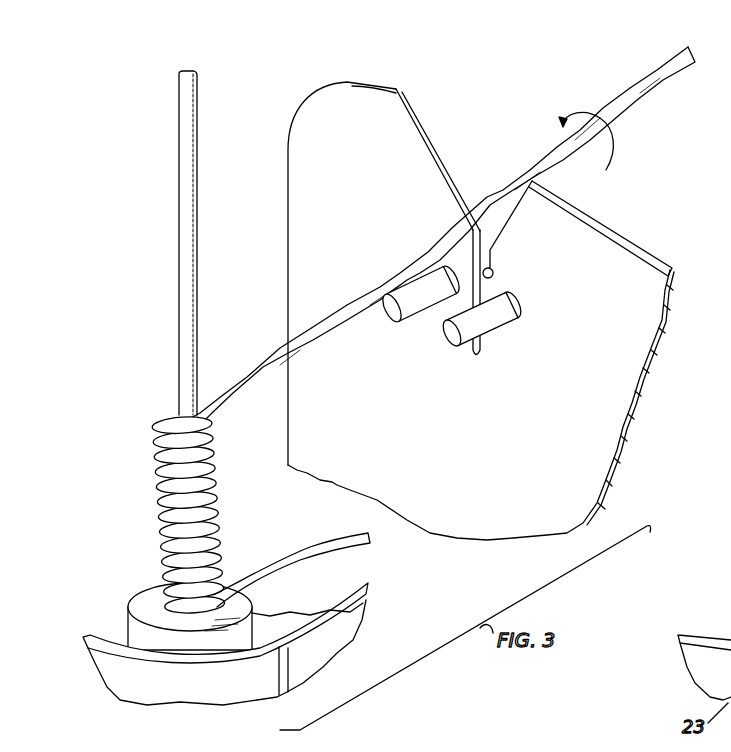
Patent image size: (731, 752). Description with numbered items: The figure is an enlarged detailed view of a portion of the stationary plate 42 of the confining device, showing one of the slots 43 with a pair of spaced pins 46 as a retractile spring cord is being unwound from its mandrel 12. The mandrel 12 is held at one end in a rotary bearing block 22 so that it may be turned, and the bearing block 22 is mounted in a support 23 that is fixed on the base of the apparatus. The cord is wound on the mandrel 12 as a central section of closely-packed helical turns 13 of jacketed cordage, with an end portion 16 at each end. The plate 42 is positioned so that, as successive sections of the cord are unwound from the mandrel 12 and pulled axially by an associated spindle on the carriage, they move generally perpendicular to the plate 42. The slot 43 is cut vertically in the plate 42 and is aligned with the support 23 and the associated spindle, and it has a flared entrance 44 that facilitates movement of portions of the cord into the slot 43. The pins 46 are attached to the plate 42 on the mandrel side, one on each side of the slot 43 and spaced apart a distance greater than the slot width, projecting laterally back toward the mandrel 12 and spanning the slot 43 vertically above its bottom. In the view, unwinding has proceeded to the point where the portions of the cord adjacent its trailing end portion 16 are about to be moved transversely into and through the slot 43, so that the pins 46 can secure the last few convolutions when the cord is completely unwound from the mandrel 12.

The mandrel 12 is at (195, 112).
The helical turns 13 is at (162, 423).
The end portion 16 is at (312, 545).
The bearing block 22 is at (142, 597).
The support 23 is at (167, 690).
The stationary plate 42 is at (618, 262).
The slot 43 is at (493, 278).
The flared entrance 44 is at (430, 152).
The pins 46 is at (443, 333).